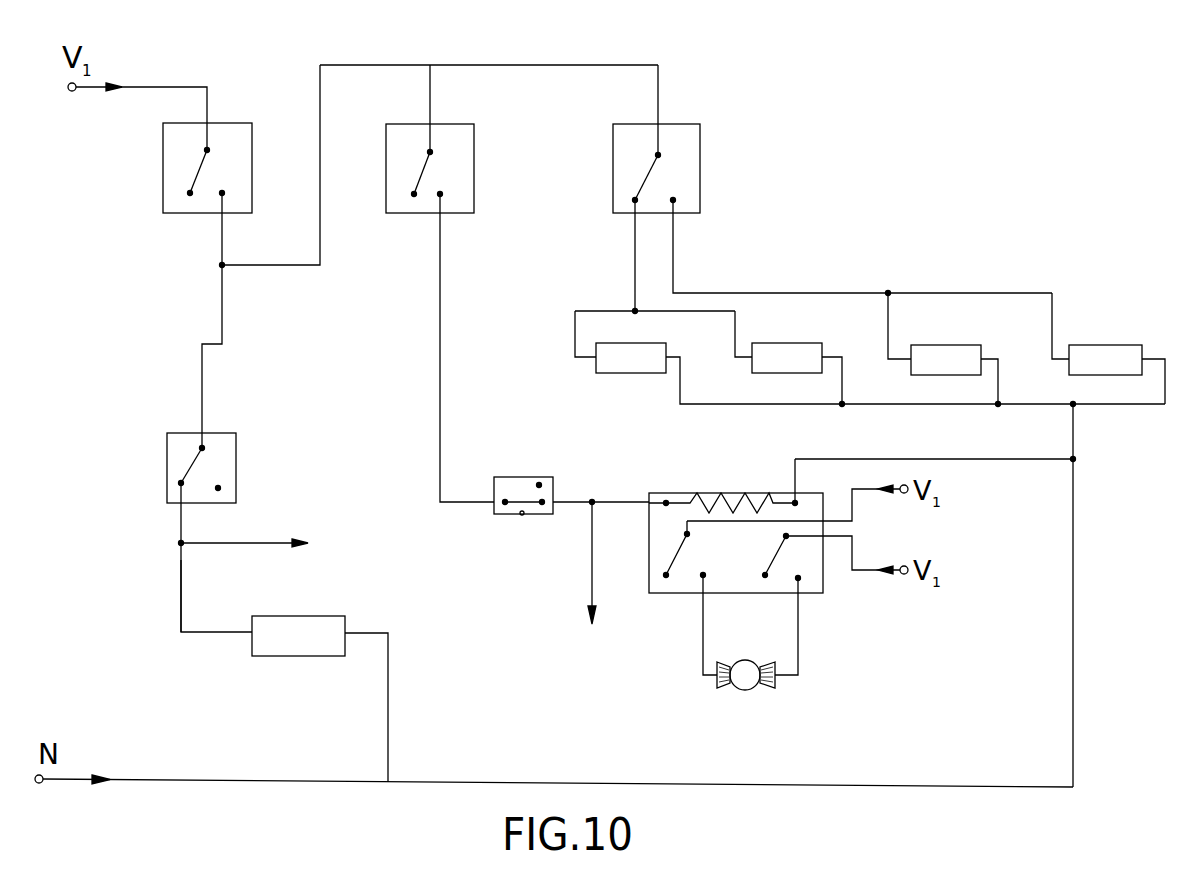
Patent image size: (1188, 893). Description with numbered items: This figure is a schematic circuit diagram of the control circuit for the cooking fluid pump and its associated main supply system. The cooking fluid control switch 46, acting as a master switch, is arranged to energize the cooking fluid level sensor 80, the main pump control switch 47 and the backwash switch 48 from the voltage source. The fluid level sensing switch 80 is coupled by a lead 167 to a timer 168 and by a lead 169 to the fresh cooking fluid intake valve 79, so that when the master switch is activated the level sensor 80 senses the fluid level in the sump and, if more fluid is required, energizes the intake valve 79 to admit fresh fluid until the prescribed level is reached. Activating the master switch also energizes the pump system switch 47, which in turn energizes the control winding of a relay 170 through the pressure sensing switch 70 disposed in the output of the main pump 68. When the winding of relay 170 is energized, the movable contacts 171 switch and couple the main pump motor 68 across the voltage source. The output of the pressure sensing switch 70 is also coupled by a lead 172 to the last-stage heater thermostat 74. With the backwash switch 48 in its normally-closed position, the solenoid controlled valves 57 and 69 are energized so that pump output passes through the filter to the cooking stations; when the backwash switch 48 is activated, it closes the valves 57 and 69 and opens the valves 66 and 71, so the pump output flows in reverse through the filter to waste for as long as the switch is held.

The cooking fluid control switch 46 is at (228, 123).
The main pump control switch 47 is at (460, 124).
The backwash switch 48 is at (677, 124).
The solenoid controlled valve 57 is at (634, 373).
The solenoid controlled valve 69 is at (770, 343).
The solenoid controlled valve 71 is at (933, 345).
The solenoid controlled valve 66 is at (1091, 345).
The cooking fluid level sensor 80 is at (236, 460).
The lead 167 is at (219, 543).
The timer 168 is at (364, 543).
The lead 169 is at (181, 591).
The fresh cooking fluid intake valve 79 is at (306, 616).
The pressure sensing switch 70 is at (508, 477).
The lead 172 is at (592, 550).
The last-stage heater thermostat 74 is at (549, 645).
The relay 170 is at (737, 493).
The movable contacts 171 is at (678, 570).
The main pump 68 is at (745, 691).